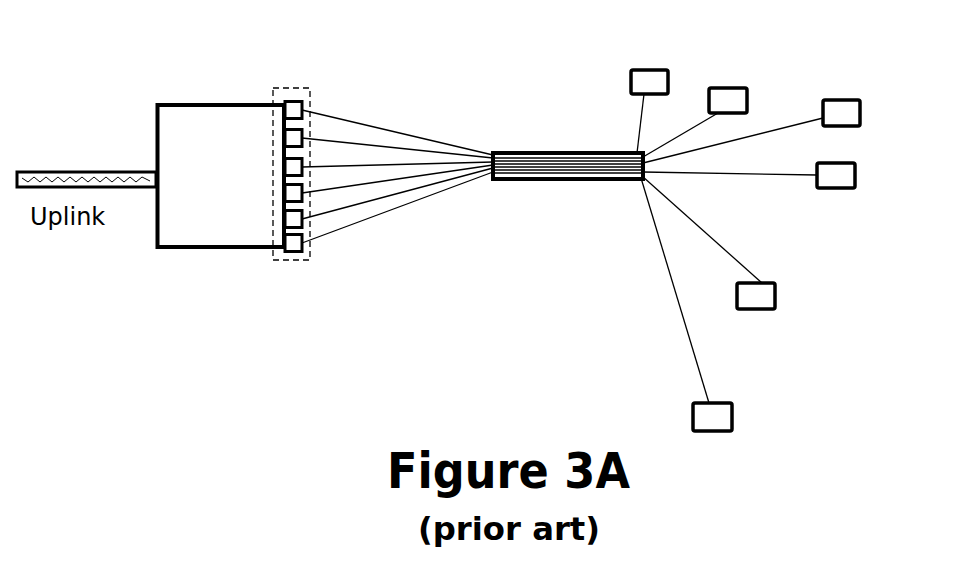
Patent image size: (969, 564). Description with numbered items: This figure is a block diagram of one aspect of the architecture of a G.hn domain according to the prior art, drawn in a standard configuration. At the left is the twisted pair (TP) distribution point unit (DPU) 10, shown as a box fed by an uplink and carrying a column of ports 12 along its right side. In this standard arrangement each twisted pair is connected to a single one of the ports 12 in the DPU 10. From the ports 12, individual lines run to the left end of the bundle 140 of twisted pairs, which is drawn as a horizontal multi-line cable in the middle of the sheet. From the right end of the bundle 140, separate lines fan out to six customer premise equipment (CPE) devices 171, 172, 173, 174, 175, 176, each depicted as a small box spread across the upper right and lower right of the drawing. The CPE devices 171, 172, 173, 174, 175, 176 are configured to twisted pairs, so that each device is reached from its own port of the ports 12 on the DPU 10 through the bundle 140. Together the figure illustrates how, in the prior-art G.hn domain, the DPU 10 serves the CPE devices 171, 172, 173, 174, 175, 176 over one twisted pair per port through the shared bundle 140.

The twisted pair distribution point unit 10 is at (230, 102).
The ports 12 is at (302, 87).
The bundle of twisted pairs 140 is at (555, 152).
The customer premise equipment device 171 is at (648, 70).
The customer premise equipment device 172 is at (750, 92).
The customer premise equipment device 173 is at (857, 102).
The customer premise equipment device 174 is at (855, 177).
The customer premise equipment device 175 is at (775, 298).
The customer premise equipment device 176 is at (732, 417).